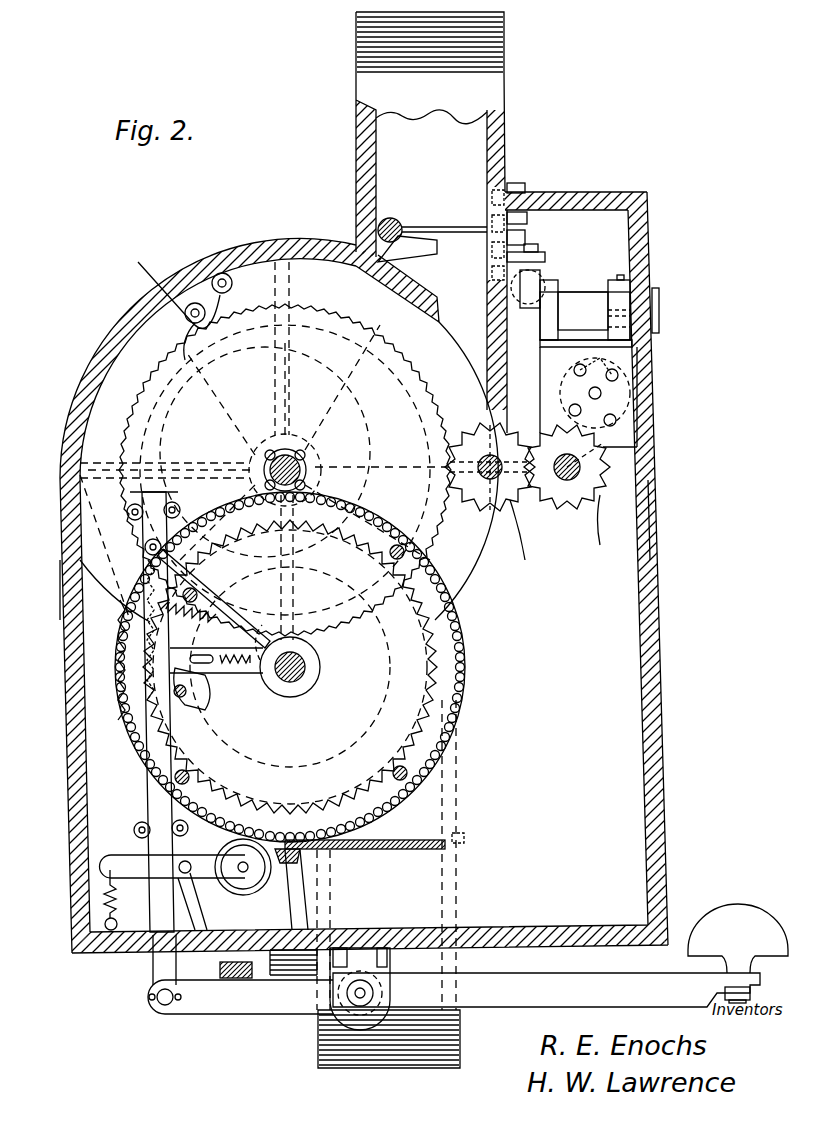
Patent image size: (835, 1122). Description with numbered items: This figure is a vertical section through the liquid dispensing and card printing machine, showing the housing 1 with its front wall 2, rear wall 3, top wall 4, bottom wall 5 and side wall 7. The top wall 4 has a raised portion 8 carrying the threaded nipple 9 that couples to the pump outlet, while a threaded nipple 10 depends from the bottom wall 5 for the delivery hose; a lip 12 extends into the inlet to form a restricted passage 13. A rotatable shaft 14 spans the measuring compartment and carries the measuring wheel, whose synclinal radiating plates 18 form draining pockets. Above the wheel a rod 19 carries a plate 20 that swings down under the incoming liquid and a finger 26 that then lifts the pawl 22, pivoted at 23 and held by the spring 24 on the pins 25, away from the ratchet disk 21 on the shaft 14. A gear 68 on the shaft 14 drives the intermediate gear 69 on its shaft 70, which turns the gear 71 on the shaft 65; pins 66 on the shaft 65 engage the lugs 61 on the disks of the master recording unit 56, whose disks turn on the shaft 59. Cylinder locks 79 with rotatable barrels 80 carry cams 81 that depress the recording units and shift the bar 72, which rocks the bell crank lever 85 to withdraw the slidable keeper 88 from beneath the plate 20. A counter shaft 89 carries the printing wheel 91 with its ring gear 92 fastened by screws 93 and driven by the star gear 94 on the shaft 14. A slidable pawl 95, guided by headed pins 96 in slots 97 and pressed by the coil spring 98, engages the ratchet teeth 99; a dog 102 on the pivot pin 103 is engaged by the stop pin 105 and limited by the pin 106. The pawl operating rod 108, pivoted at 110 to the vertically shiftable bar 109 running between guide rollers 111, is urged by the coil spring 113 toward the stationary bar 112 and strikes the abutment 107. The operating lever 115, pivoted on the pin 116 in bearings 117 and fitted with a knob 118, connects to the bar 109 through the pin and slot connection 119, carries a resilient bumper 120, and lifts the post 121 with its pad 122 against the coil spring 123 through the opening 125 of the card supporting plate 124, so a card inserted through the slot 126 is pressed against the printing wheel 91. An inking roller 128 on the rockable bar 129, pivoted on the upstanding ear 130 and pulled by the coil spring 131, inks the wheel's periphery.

The housing 1 is at (670, 244).
The front wall 2 is at (652, 512).
The rear wall 3 is at (62, 600).
The top wall 4 is at (604, 192).
The bottom wall 5 is at (122, 953).
The side wall 7 is at (649, 520).
The raised portion 8 is at (483, 93).
The threaded nipple 9 is at (497, 50).
The threaded nipple 10 is at (405, 1060).
The lip 12 is at (418, 290).
The restricted passage 13 is at (461, 325).
The rotatable shaft 14 is at (289, 450).
The synclinal radiating plates 18 is at (275, 370).
The rod 19 is at (392, 218).
The plate 20 is at (452, 227).
The ratchet disk 21 is at (372, 345).
The pawl 22 is at (338, 270).
The pivot 23 is at (228, 275).
The spring 24 is at (165, 287).
The pins 25 is at (197, 303).
The finger 26 is at (406, 238).
The master recording unit 56 is at (533, 392).
The shaft 59 is at (602, 398).
The lugs 61 is at (593, 383).
The shaft 65 is at (567, 482).
The pins 66 is at (603, 485).
The gear 68 is at (478, 506).
The intermediate gear 69 is at (527, 541).
The shaft 70 is at (478, 455).
The gear 71 is at (610, 530).
The bar 72 is at (528, 300).
The cylinder locks 79 is at (632, 290).
The rotatable barrels 80 is at (583, 303).
The cams 81 is at (556, 292).
The bell crank lever 85 is at (548, 262).
The slidable keeper 88 is at (527, 238).
The counter shaft 89 is at (318, 680).
The printing wheel 91 is at (440, 712).
The ring gear 92 is at (468, 688).
The screws 93 is at (397, 540).
The star gear 94 is at (268, 466).
The pawl 95 is at (196, 654).
The headed pins 96 is at (226, 690).
The slots 97 is at (236, 655).
The coil spring 98 is at (298, 652).
The ratchet teeth 99 is at (412, 660).
The dog 102 is at (205, 726).
The pivot pin 103 is at (184, 700).
The stop pin 105 is at (122, 722).
The pin 106 is at (126, 666).
The abutment 107 is at (320, 660).
The pawl operating rod 108 is at (225, 615).
The vertically shiftable bar 109 is at (150, 797).
The pivot 110 is at (146, 547).
The guide rollers 111 is at (160, 504).
The stationary bar 112 is at (215, 585).
The coil spring 113 is at (128, 616).
The operating lever 115 is at (555, 990).
The pin 116 is at (328, 1013).
The bearings 117 is at (375, 993).
The knob 118 is at (730, 918).
The pin and slot connection 119 is at (152, 1005).
The resilient bumper 120 is at (232, 978).
The post 121 is at (287, 902).
The pad 122 is at (300, 862).
The coil spring 123 is at (275, 977).
The card supporting plate 124 is at (470, 855).
The opening 125 is at (300, 852).
The slot 126 is at (450, 830).
The inking roller 128 is at (240, 835).
The rockable bar 129 is at (148, 856).
The upstanding ear 130 is at (213, 880).
The coil spring 131 is at (100, 905).